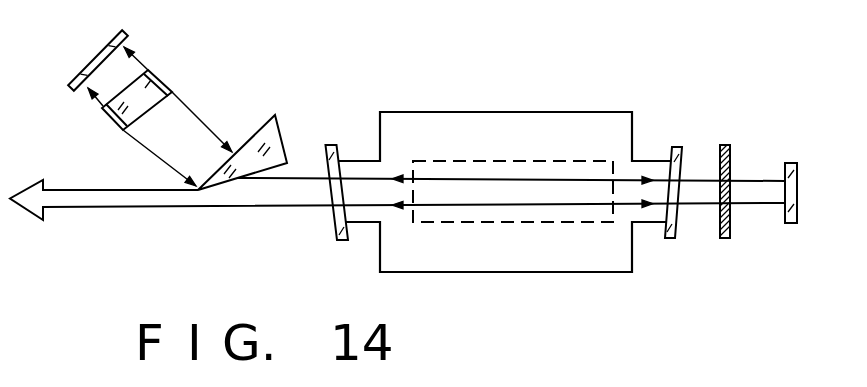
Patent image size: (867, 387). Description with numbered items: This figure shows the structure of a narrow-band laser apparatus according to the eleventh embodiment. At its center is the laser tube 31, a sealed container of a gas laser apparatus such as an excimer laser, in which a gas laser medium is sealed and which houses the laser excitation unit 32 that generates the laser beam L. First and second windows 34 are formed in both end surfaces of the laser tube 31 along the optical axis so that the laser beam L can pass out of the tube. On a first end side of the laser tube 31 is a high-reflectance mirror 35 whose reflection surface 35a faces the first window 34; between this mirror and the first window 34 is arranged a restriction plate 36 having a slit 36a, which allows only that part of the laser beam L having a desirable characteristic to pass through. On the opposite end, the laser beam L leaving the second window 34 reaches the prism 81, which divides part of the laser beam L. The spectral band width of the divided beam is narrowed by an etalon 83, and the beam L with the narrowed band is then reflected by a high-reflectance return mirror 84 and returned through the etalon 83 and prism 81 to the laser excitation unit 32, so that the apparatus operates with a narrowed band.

The laser tube 31 is at (433, 112).
The laser excitation unit 32 is at (532, 161).
The window 34 is at (335, 216).
The high-reflectance mirror 35 is at (799, 193).
The reflection surface 35a is at (782, 174).
The restriction plate 36 is at (730, 162).
The slit 36a is at (732, 190).
The prism 81 is at (281, 140).
The etalon 83 is at (167, 76).
The high-reflectance return mirror 84 is at (106, 47).
The laser beam L is at (103, 207).